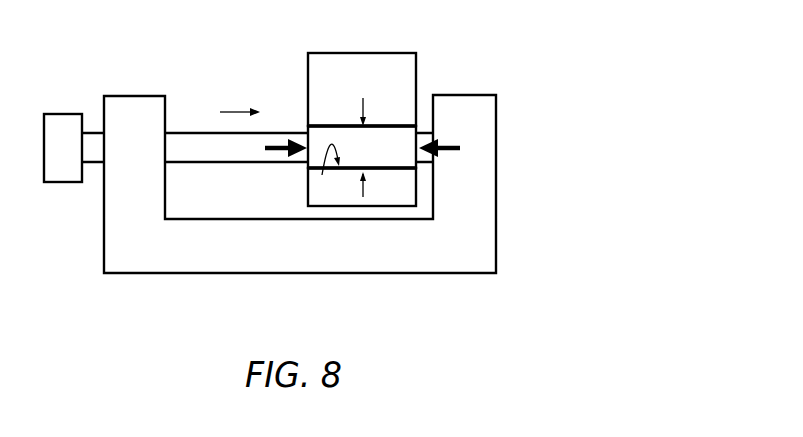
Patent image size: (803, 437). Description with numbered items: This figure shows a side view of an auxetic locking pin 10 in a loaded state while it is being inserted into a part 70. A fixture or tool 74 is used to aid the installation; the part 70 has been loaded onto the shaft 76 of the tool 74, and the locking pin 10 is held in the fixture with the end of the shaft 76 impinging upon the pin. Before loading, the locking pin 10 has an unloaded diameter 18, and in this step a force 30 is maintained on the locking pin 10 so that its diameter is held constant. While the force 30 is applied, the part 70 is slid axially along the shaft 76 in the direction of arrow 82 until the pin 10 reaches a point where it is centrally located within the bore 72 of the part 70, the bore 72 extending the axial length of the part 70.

The locking pin 10 is at (387, 138).
The diameter 18 is at (363, 98).
The force 30 is at (277, 150).
The part 70 is at (323, 70).
The bore 72 is at (322, 175).
The tool 74 is at (453, 262).
The shaft 76 is at (198, 142).
The arrow 82 is at (233, 110).